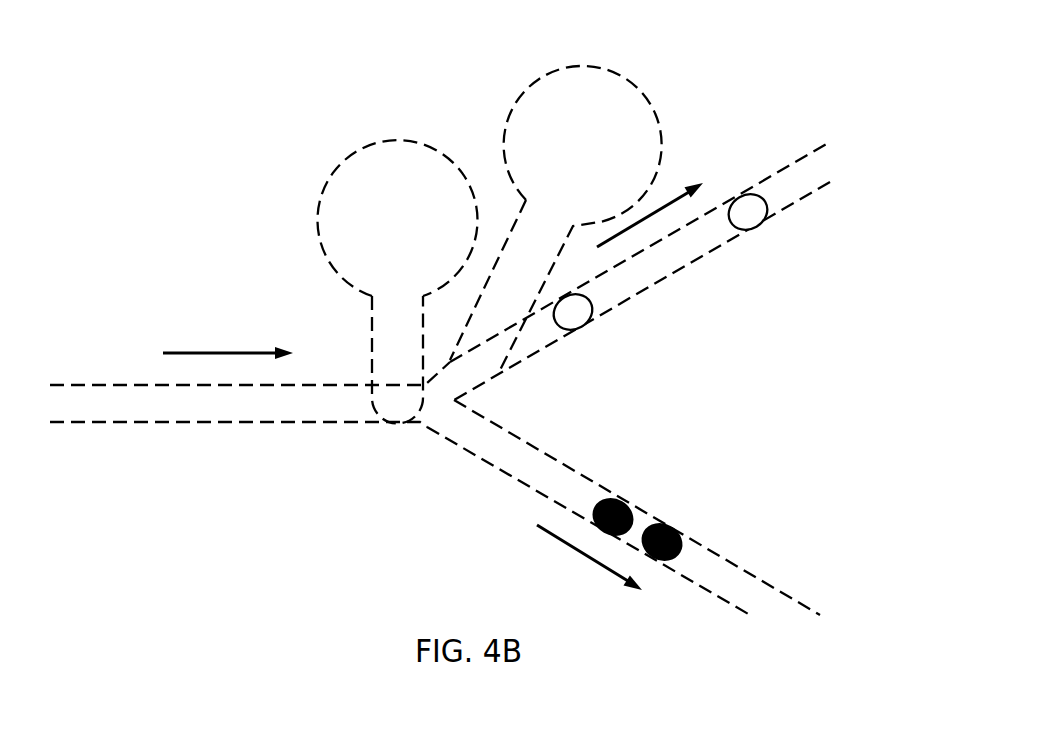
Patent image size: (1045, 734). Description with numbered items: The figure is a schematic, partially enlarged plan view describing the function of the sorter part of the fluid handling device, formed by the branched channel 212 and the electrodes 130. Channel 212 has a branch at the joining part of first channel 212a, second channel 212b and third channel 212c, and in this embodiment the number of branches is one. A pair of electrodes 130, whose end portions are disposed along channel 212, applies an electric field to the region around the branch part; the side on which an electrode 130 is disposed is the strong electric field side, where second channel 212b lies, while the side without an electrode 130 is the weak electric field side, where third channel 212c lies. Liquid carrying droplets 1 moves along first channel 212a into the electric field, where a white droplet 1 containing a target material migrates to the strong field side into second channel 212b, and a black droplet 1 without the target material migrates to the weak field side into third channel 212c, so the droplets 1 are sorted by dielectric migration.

The droplet 1 is at (740, 197).
The electrode 130 is at (418, 142).
The channel 212 is at (440, 378).
The first channel 212a is at (278, 423).
The second channel 212b is at (625, 304).
The third channel 212c is at (592, 478).